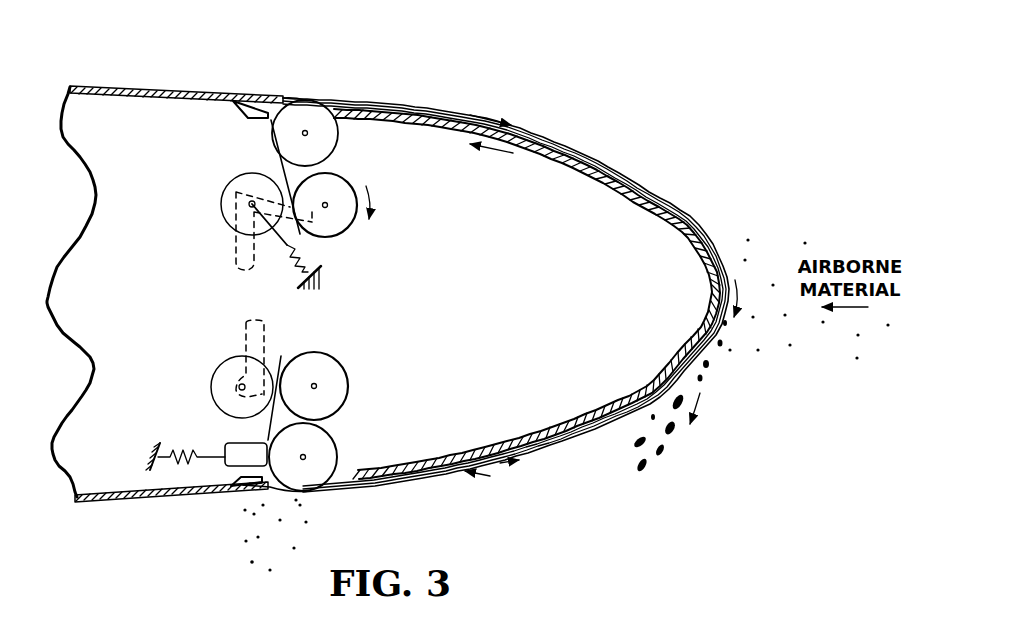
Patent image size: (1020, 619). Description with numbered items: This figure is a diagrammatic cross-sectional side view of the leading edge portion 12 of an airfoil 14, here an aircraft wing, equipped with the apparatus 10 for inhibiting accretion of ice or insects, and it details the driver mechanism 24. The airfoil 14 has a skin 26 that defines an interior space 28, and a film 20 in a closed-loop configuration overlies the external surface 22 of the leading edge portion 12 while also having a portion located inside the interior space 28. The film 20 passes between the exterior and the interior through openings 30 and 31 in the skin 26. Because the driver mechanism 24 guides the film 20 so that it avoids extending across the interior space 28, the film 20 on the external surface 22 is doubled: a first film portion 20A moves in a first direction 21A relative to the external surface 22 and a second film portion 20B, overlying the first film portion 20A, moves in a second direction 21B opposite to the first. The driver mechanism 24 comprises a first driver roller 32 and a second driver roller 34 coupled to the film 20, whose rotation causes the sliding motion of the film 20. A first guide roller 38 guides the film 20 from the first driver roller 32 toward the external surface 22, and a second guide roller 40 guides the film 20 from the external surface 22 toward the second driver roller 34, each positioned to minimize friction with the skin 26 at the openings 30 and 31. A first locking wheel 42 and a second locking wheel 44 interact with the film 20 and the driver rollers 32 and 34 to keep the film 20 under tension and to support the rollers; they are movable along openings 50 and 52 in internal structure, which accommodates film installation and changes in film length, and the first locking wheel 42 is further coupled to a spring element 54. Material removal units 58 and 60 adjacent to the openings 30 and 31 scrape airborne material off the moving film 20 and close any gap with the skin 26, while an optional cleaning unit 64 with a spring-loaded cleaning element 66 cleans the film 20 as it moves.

The apparatus for inhibiting accretion of airborne material 10 is at (488, 263).
The leading edge portion 12 is at (636, 186).
The airfoil 14 is at (125, 87).
The film 20 is at (486, 263).
The first film portion 20A is at (535, 149).
The second film portion 20B is at (543, 151).
The first direction 21A is at (490, 148).
The second direction 21B is at (488, 120).
The external surface 22 is at (689, 378).
The driver mechanism 24 is at (212, 422).
The skin 26 is at (190, 91).
The interior space 28 is at (546, 308).
The opening 30 is at (285, 94).
The opening 31 is at (287, 500).
The first driver roller 32 is at (340, 225).
The second driver roller 34 is at (333, 375).
The first guide roller 38 is at (330, 140).
The second guide roller 40 is at (328, 453).
The first locking wheel 42 is at (223, 207).
The second locking wheel 44 is at (217, 384).
The opening 50 is at (243, 263).
The opening 52 is at (269, 338).
The spring element 54 is at (324, 263).
The material removal unit 58 is at (254, 124).
The material removal unit 60 is at (230, 478).
The cleaning unit 64 is at (193, 437).
The cleaning element 66 is at (252, 461).